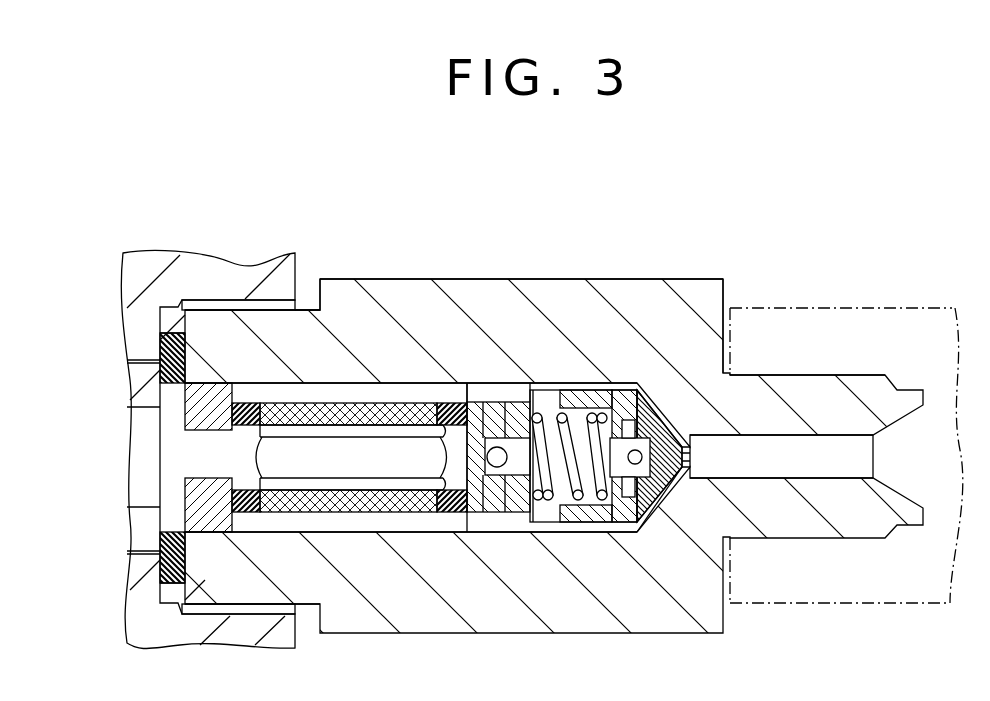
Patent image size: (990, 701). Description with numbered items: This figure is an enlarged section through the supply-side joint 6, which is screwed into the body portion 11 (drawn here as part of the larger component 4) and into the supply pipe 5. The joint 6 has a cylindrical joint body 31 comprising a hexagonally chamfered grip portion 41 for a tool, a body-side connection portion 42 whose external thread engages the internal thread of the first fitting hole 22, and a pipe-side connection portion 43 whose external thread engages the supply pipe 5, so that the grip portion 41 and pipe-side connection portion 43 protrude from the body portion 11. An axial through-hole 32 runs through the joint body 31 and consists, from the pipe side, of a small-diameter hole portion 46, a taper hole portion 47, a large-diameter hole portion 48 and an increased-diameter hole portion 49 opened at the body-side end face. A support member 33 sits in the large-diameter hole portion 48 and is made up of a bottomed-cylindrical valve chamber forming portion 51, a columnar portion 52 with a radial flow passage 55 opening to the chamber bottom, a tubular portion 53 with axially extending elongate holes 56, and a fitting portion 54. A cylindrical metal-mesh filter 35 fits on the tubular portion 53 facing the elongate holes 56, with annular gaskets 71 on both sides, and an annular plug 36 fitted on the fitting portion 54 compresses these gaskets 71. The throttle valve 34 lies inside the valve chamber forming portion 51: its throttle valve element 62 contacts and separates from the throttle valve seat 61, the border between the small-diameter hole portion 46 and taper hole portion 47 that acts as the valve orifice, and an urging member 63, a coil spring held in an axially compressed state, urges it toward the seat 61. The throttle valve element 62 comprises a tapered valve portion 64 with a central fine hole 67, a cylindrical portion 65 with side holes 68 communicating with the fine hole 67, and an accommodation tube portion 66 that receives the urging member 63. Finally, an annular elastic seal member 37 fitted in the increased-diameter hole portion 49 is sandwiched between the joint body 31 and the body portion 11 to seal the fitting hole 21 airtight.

The fuel injection device 4 is at (208, 430).
The body portion 11 is at (142, 264).
The fitting hole 21 is at (262, 316).
The first fitting hole 22 is at (252, 267).
The joint body 31 is at (716, 278).
The through-hole 32 is at (545, 455).
The support member 33 is at (503, 420).
The throttle valve 34 is at (692, 403).
The filter 35 is at (330, 397).
The plug 36 is at (212, 386).
The seal member 37 is at (188, 308).
The grip portion 41 is at (476, 292).
The body-side connection portion 42 is at (302, 290).
The pipe-side connection portion 43 is at (809, 393).
The small-diameter hole portion 46 is at (807, 478).
The taper hole portion 47 is at (648, 526).
The large-diameter hole portion 48 is at (442, 516).
The increased-diameter hole portion 49 is at (178, 606).
The valve chamber forming portion 51 is at (583, 499).
The columnar portion 52 is at (513, 506).
The tubular portion 53 is at (330, 489).
The fitting portion 54 is at (176, 570).
The flow passage 55 is at (494, 440).
The elongate holes 56 is at (259, 458).
The throttle valve seat 61 is at (685, 452).
The throttle valve element 62 is at (657, 419).
The urging member 63 is at (538, 412).
The valve portion 64 is at (664, 476).
The cylindrical portion 65 is at (610, 534).
The accommodation tube portion 66 is at (550, 533).
The fine hole 67 is at (686, 456).
The side holes 68 is at (627, 424).
The annular gaskets 71 is at (245, 403).
The supply pipe 5 is at (828, 308).
The supply-side joint 6 is at (748, 248).